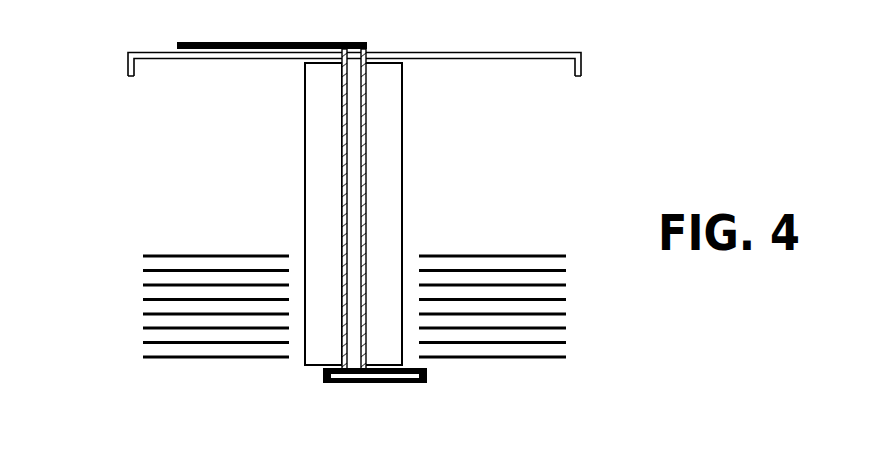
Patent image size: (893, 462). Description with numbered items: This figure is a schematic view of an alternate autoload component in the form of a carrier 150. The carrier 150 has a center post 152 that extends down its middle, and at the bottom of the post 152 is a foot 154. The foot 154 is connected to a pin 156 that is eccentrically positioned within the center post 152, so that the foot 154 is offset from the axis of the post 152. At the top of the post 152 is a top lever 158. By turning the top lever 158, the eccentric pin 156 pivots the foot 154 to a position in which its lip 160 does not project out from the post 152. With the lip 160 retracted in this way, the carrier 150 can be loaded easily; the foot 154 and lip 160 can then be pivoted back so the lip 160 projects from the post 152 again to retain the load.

The carrier 150 is at (586, 71).
The center post 152 is at (403, 207).
The foot 154 is at (322, 383).
The pin 156 is at (366, 165).
The top lever 158 is at (177, 45).
The lip 160 is at (419, 366).